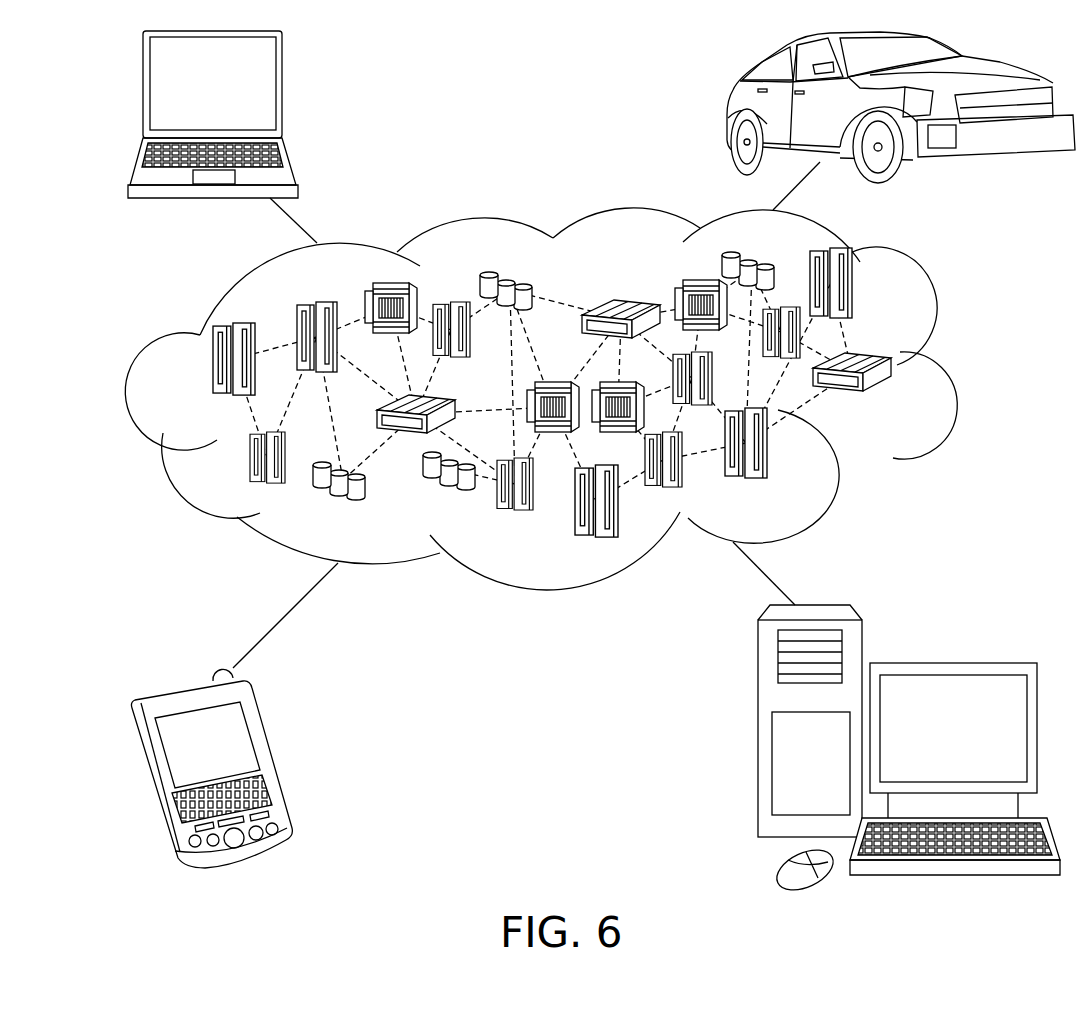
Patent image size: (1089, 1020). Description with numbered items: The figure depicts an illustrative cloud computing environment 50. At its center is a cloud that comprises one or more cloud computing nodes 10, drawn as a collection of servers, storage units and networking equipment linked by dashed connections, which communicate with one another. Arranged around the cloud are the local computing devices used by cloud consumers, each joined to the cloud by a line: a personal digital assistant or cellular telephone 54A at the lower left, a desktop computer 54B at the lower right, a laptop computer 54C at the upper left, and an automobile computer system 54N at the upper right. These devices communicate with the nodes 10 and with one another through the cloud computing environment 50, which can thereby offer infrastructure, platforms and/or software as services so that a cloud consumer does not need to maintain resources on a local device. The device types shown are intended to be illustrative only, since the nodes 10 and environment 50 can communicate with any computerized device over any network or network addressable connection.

The cloud computing node 10 is at (900, 403).
The cloud computing environment 50 is at (952, 370).
The personal digital assistant or cellular telephone 54A is at (270, 758).
The desktop computer 54B is at (950, 663).
The laptop computer 54C is at (282, 92).
The automobile computer system 54N is at (728, 108).